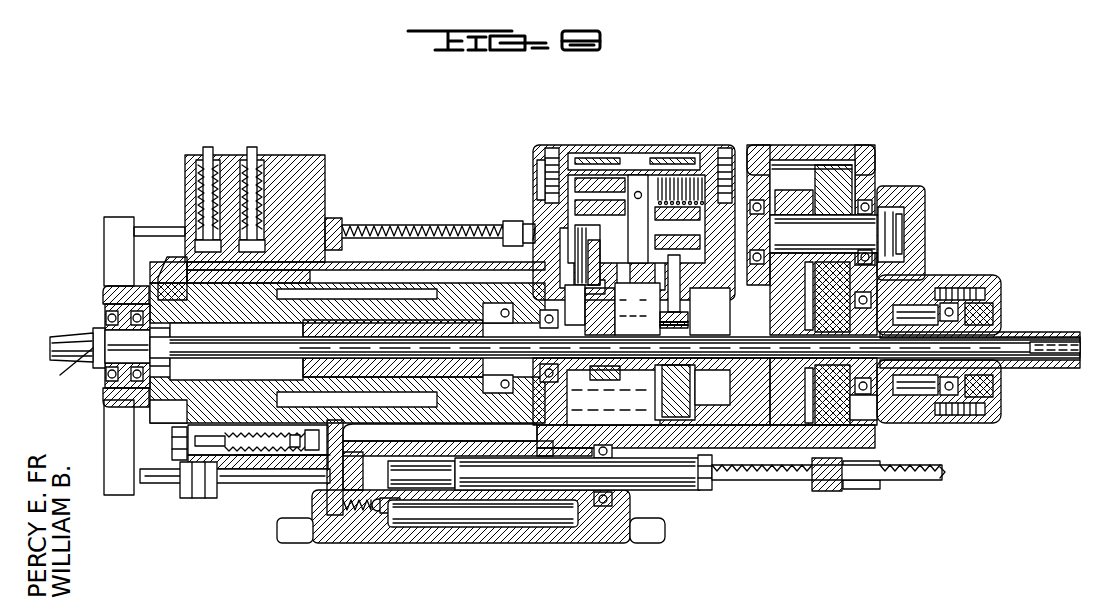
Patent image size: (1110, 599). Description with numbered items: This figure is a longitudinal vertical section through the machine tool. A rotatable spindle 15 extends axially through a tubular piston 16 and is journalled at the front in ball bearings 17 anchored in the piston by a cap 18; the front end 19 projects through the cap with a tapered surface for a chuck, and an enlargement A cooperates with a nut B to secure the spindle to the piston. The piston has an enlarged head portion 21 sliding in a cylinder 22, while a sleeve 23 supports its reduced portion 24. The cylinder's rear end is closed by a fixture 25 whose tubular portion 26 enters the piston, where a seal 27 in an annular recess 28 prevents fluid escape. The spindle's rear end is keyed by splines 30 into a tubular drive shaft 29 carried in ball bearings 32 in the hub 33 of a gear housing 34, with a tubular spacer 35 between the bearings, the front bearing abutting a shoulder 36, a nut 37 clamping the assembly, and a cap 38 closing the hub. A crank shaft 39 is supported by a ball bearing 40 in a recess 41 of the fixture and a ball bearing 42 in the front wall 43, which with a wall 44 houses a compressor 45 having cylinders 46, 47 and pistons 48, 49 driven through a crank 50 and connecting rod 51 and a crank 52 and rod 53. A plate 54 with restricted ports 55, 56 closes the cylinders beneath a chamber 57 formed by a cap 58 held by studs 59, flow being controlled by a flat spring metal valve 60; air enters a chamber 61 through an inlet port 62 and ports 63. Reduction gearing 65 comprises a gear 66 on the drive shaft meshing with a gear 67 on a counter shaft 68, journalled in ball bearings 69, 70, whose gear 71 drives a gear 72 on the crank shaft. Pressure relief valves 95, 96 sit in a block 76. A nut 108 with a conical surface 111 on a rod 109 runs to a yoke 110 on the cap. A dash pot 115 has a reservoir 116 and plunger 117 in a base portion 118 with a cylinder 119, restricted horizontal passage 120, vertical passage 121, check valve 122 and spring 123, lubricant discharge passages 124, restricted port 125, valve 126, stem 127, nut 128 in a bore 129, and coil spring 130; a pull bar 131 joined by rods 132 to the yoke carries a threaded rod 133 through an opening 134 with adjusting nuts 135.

The spindle 15 is at (500, 355).
The tubular piston 16 is at (152, 403).
The ball bearings 17 is at (108, 314).
The cap 18 is at (100, 287).
The front end of the spindle 19 is at (60, 337).
The cylindrical head portion 21 is at (462, 285).
The cylinder 22 is at (425, 262).
The sleeve 23 is at (185, 280).
The reduced portion of the piston 24 is at (165, 285).
The fixture 25 is at (575, 388).
The tubular portion 26 is at (340, 365).
The seal 27 is at (572, 416).
The annular recess 28 is at (505, 376).
The drive shaft 29 is at (1060, 330).
The splines 30 is at (1020, 345).
The ball bearings 32 is at (965, 290).
The hub 33 is at (925, 420).
The gear housing 34 is at (925, 192).
The tubular spacer 35 is at (925, 275).
The shoulder 36 is at (852, 400).
The nut 37 is at (1003, 300).
The cap 38 is at (1000, 390).
The crank shaft 39 is at (710, 311).
The ball bearing 40 is at (562, 322).
The recess 41 is at (552, 345).
The ball bearing 42 is at (735, 385).
The front wall 43 is at (758, 148).
The wall 44 is at (540, 185).
The compressor 45 is at (702, 139).
The cylinder 46 is at (600, 262).
The cylinder 47 is at (705, 306).
The piston 48 is at (525, 215).
The piston 49 is at (702, 240).
The crank 50 is at (612, 325).
The connecting rod 51 is at (600, 245).
The crank 52 is at (662, 380).
The rod 53 is at (665, 303).
The plate 54 is at (660, 156).
The restricted port 55 is at (552, 150).
The restricted port 56 is at (725, 150).
The chamber 57 is at (598, 156).
The cap 58 is at (538, 165).
The studs 59 is at (545, 150).
The flat spring metal valve 60 is at (690, 152).
The chamber 61 is at (641, 219).
The inlet port 62 is at (643, 206).
The ports 63 is at (683, 195).
The reduction gearing 65 is at (800, 170).
The gear 66 is at (818, 395).
The gear 67 is at (865, 150).
The counter shaft 68 is at (815, 232).
The ball bearing 69 is at (888, 203).
The ball bearing 70 is at (770, 240).
The gear 71 is at (795, 165).
The gear 72 is at (818, 405).
The block 76 is at (298, 162).
The pressure relief valve 95 is at (205, 150).
The pressure relief valve 96 is at (252, 148).
The nut 108 is at (512, 221).
The rod 109 is at (375, 225).
The yoke 110 is at (120, 428).
The conical surface 111 is at (530, 230).
The dash pot 115 is at (687, 498).
The reservoir 116 is at (560, 530).
The plunger 117 is at (577, 474).
The base portion 118 is at (388, 520).
The cylinder 119 is at (430, 480).
The restricted horizontal passage 120 is at (380, 465).
The vertical passage 121 is at (305, 543).
The check valve 122 is at (400, 525).
The spring 123 is at (330, 543).
The lubricant discharge passages 124 is at (353, 430).
The restricted port 125 is at (327, 500).
The valve 126 is at (270, 465).
The stem 127 is at (240, 470).
The nut 128 is at (230, 470).
The bore 129 is at (195, 485).
The coil spring 130 is at (172, 435).
The pull bar 131 is at (822, 491).
The rods 132 is at (160, 470).
The threaded rod 133 is at (943, 474).
The opening 134 is at (800, 466).
The adjusting nuts 135 is at (712, 470).
The enlargement A is at (71, 368).
The nut B is at (148, 343).